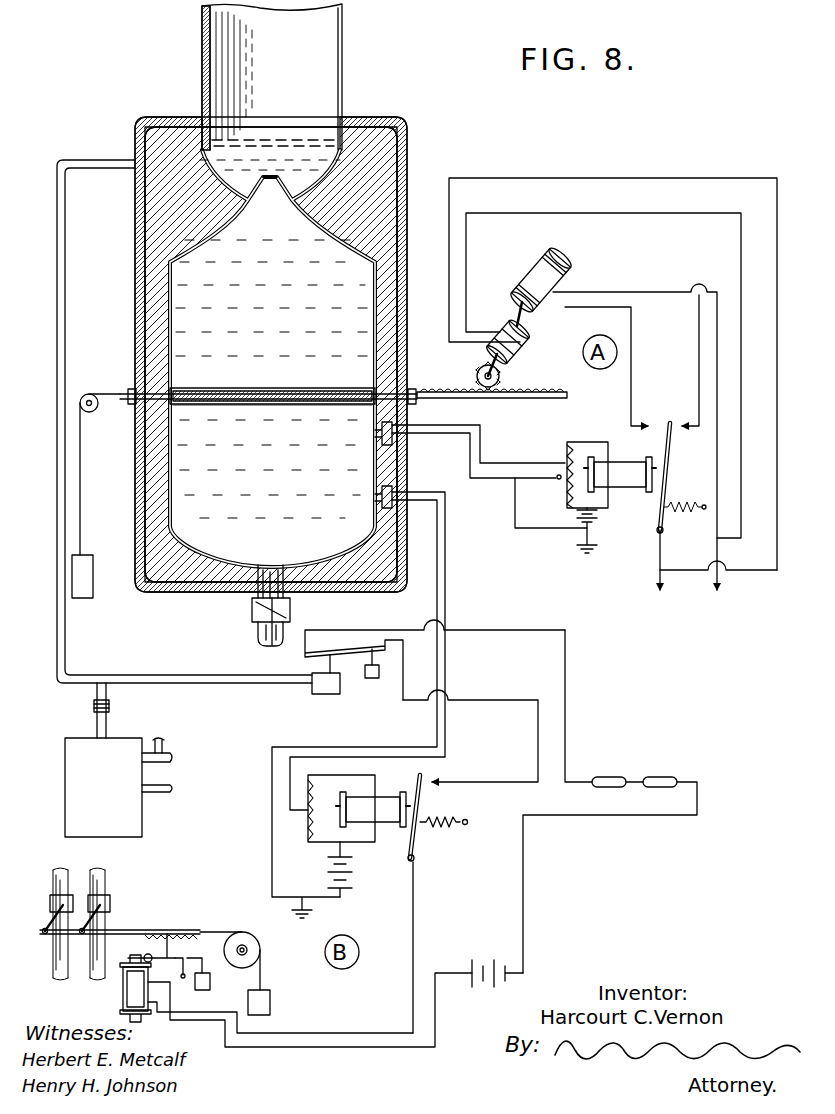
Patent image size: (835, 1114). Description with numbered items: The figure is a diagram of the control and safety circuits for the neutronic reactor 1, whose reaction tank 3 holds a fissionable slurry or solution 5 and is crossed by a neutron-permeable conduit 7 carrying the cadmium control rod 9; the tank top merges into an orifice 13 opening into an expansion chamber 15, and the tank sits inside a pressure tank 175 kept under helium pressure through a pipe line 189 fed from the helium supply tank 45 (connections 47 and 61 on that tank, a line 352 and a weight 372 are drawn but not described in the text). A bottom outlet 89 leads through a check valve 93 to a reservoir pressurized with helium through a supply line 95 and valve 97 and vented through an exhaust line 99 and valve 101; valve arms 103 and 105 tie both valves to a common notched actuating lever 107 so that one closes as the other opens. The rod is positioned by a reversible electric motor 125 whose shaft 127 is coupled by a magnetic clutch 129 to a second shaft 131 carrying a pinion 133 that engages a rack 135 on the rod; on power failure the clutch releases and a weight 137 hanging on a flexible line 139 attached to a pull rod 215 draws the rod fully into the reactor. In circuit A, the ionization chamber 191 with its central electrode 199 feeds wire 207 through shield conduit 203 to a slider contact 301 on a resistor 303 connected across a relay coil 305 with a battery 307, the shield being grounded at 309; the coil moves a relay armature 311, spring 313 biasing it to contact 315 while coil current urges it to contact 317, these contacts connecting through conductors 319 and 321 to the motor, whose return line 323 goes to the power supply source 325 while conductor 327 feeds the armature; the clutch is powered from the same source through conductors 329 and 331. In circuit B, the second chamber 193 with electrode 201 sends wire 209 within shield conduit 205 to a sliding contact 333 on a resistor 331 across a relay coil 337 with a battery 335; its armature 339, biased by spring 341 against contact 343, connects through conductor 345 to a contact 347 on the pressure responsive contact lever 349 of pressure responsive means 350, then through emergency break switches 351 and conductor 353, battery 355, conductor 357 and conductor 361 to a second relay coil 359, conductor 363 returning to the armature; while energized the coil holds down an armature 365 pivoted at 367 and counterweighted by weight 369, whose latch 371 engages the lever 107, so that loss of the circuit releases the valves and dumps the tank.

The reactor 1 is at (168, 490).
The reaction tank 3 is at (372, 330).
The fissionable suspension 5 is at (182, 330).
The conduit 7 is at (248, 404).
The control rod 9 is at (316, 404).
The orifice 13 is at (272, 178).
The expansion chamber 15 is at (342, 78).
The helium supply tank 45 is at (72, 738).
The pipe 47 is at (170, 744).
The pipe 61 is at (165, 792).
The outlet 89 is at (290, 582).
The check valve 93 is at (290, 609).
The supply line 95 is at (174, 766).
The valve 97 is at (50, 898).
The exhaust line 99 is at (100, 870).
The valve 101 is at (110, 897).
The valve arm 103 is at (44, 928).
The valve arm 105 is at (104, 908).
The actuating lever 107 is at (104, 930).
The electric motor 125 is at (530, 262).
The shaft 127 is at (525, 330).
The magnetic clutch 129 is at (522, 345).
The second shaft 131 is at (508, 364).
The pinion 133 is at (478, 368).
The rack 135 is at (492, 398).
The weight 137 is at (94, 572).
The flexible line 139 is at (84, 435).
The pressure tank 175 is at (408, 152).
The pipe line 189 is at (100, 160).
The ionization chamber 191 is at (400, 445).
The ionization chamber 193 is at (400, 482).
The central electrode 199 is at (375, 432).
The central electrode 201 is at (375, 497).
The shield conduit 203 is at (480, 450).
The shield conduit 205 is at (448, 602).
The wire 207 is at (484, 476).
The wire line 209 is at (440, 570).
The pull rod 215 is at (198, 405).
The slider contact 301 is at (560, 468).
The resistor 303 is at (572, 445).
The relay coil 305 is at (630, 478).
The battery 307 is at (574, 514).
The ground 309 is at (572, 552).
The relay armature 311 is at (668, 462).
The spring 313 is at (684, 514).
The motor-control contact 315 is at (684, 418).
The motor-control contact 317 is at (650, 416).
The conductor 319 is at (697, 358).
The conductor 321 is at (634, 333).
The return line 323 is at (655, 290).
The power supply source 325 is at (702, 586).
The conductor 327 is at (640, 566).
The conductor 329 is at (654, 213).
The resistor 331 is at (708, 170).
The sliding contact 333 is at (308, 810).
The battery 335 is at (346, 872).
The relay coil 337 is at (372, 805).
The armature 339 is at (425, 800).
The spring 341 is at (450, 826).
The contact 343 is at (432, 782).
The conductor 345 is at (510, 690).
The contact 347 is at (385, 672).
The pressure responsive contact lever 349 is at (350, 650).
The pressure responsive means 350 is at (336, 694).
The emergency break switches 351 is at (656, 776).
The conductor 352 is at (260, 683).
The conductor 353 is at (568, 690).
The battery 355 is at (490, 946).
The conductor 357 is at (526, 866).
The second relay coil 359 is at (123, 990).
The conductor 361 is at (248, 1047).
The conductor 363 is at (347, 1033).
The armature 365 is at (178, 957).
The pivot 367 is at (146, 954).
The weight 369 is at (210, 977).
The latch 371 is at (185, 932).
The weight 372 is at (272, 994).